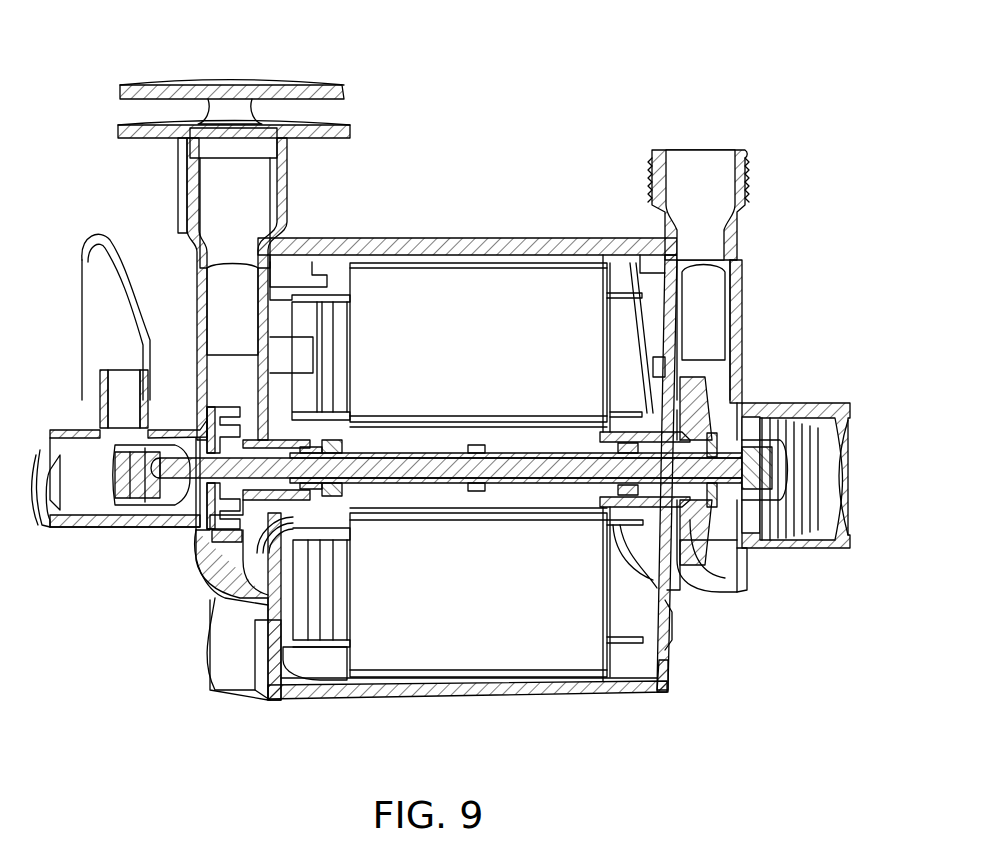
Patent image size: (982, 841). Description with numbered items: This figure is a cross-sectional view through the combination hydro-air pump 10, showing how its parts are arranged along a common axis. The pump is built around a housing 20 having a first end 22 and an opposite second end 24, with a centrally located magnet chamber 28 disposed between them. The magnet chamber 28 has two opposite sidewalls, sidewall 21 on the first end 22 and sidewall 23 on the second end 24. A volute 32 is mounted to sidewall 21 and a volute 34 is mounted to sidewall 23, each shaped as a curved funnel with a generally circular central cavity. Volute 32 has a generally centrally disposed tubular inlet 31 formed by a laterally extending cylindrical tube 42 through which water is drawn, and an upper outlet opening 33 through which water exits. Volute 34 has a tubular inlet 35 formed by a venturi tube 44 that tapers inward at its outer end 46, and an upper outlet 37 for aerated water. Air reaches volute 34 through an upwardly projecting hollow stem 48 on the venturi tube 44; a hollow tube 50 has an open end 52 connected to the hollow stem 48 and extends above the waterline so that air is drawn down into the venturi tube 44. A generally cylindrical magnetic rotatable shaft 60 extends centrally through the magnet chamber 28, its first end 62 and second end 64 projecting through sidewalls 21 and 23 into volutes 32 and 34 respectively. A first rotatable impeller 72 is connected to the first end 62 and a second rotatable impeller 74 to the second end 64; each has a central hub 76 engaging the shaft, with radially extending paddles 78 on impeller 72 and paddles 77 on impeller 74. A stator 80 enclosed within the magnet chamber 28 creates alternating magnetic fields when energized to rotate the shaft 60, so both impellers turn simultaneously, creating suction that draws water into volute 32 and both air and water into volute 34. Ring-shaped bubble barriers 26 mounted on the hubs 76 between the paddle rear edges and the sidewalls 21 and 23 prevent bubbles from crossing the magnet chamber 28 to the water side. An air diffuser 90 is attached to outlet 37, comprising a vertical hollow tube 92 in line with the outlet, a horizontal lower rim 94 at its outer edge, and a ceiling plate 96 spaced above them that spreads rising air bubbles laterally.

The pump 10 is at (441, 392).
The housing 20 is at (593, 706).
The sidewall 21 is at (663, 700).
The first end 22 is at (752, 344).
The sidewall 23 is at (275, 700).
The second end 24 is at (146, 499).
The bubble barriers 26 is at (690, 585).
The magnet chamber 28 is at (341, 284).
The tubular inlet 31 is at (835, 470).
The volute 32 is at (742, 320).
The outlet opening 33 is at (700, 150).
The volute 34 is at (193, 615).
The tubular inlet 35 is at (48, 520).
The outlet 37 is at (232, 160).
The cylindrical tube 42 is at (790, 405).
The venturi tube 44 is at (90, 540).
The outer end 46 is at (65, 545).
The hollow stem 48 is at (100, 395).
The hollow tube 50 is at (60, 280).
The open end 52 is at (95, 430).
The rotatable shaft 60 is at (398, 452).
The first end 62 is at (742, 440).
The second end 64 is at (140, 510).
The first rotatable impeller 72 is at (691, 367).
The second rotatable impeller 74 is at (215, 405).
The central hub 76 is at (310, 441).
The paddles 77 is at (235, 545).
The paddles 78 is at (695, 528).
The stator 80 is at (465, 352).
The air diffuser 90 is at (231, 222).
The hollow tube 92 is at (180, 180).
The lower rim 94 is at (345, 131).
The ceiling plate 96 is at (125, 90).